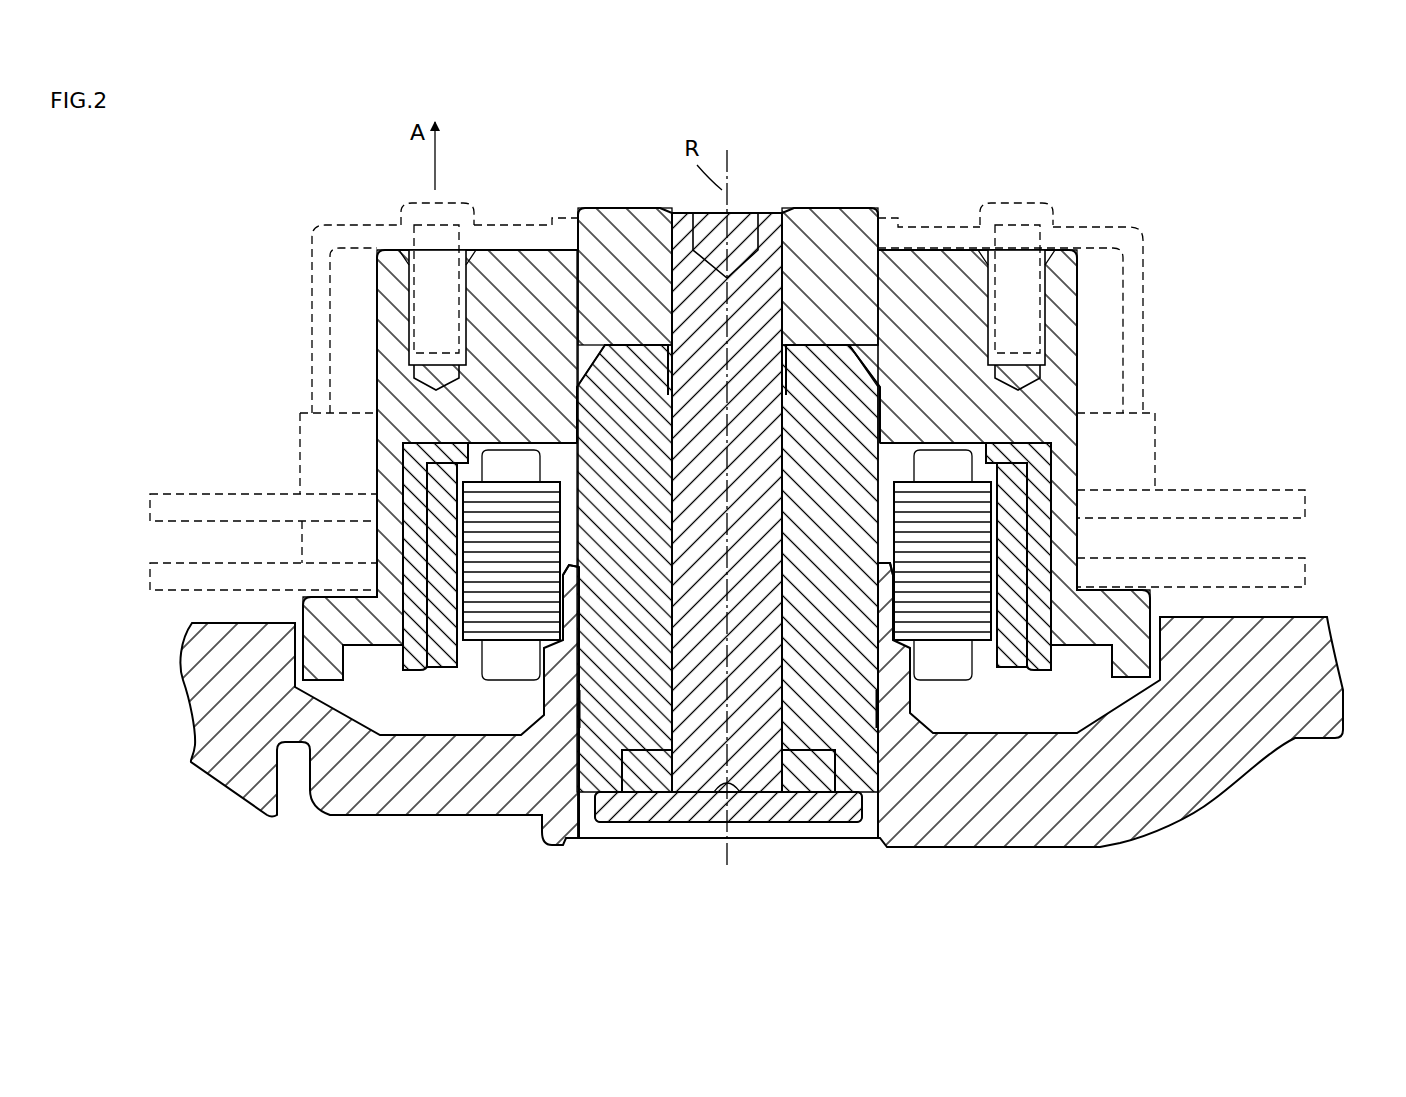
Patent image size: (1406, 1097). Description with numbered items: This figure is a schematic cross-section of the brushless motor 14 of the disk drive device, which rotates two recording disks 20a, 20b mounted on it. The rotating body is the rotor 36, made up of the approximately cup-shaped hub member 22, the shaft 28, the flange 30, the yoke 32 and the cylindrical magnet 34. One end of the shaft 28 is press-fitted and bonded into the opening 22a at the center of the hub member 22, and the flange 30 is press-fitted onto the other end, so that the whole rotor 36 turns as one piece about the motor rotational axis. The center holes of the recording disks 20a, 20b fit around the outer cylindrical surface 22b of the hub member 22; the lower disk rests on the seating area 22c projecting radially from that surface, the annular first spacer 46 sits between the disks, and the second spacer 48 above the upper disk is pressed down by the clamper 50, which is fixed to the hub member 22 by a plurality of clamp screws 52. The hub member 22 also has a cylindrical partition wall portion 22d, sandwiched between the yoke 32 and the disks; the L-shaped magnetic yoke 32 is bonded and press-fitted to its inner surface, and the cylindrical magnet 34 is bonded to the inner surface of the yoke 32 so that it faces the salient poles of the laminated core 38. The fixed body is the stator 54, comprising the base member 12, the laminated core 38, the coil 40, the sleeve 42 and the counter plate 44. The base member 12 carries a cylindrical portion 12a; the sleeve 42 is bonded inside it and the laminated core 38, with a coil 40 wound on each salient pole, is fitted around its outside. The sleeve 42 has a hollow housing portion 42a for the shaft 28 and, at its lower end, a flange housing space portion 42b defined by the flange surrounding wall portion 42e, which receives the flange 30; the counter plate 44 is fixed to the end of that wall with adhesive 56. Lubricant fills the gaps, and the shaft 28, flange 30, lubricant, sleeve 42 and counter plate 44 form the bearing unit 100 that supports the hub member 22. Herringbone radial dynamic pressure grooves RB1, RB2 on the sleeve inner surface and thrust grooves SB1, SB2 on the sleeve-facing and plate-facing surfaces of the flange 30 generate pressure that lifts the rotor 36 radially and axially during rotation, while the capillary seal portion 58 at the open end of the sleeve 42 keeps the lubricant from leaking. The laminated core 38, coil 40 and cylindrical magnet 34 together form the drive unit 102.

The base member 12 is at (226, 778).
The cylindrical portion 12a is at (593, 758).
The brushless motor 14 is at (914, 148).
The recording disk 20a is at (1306, 576).
The recording disk 20b is at (1258, 488).
The hub member 22 is at (620, 216).
The opening 22a is at (774, 262).
The outer cylindrical surface 22b is at (373, 377).
The seating area 22c is at (1152, 592).
The partition wall portion 22d is at (390, 543).
The shaft 28 is at (756, 214).
The flange 30 is at (824, 762).
The yoke 32 is at (415, 660).
The cylindrical magnet 34 is at (438, 660).
The rotor 36 is at (830, 230).
The laminated core 38 is at (1010, 672).
The coil 40 is at (498, 668).
The sleeve 42 is at (530, 285).
The housing portion 42a is at (633, 370).
The flange housing space portion 42b is at (640, 842).
The flange surrounding wall portion 42e is at (598, 792).
The counter plate 44 is at (688, 808).
The first spacer 46 is at (1156, 537).
The second spacer 48 is at (1150, 417).
The clamper 50 is at (918, 236).
The clamp screw 52 is at (438, 206).
The stator 54 is at (1025, 812).
The adhesive 56 is at (628, 800).
The capillary seal portion 58 is at (690, 433).
The bearing unit 100 is at (748, 755).
The drive unit 102 is at (1007, 686).
The radial dynamic pressure groove RB1 is at (612, 700).
The radial dynamic pressure groove RB2 is at (667, 428).
The first thrust dynamic pressure groove SB1 is at (952, 648).
The second thrust dynamic pressure groove SB2 is at (808, 770).